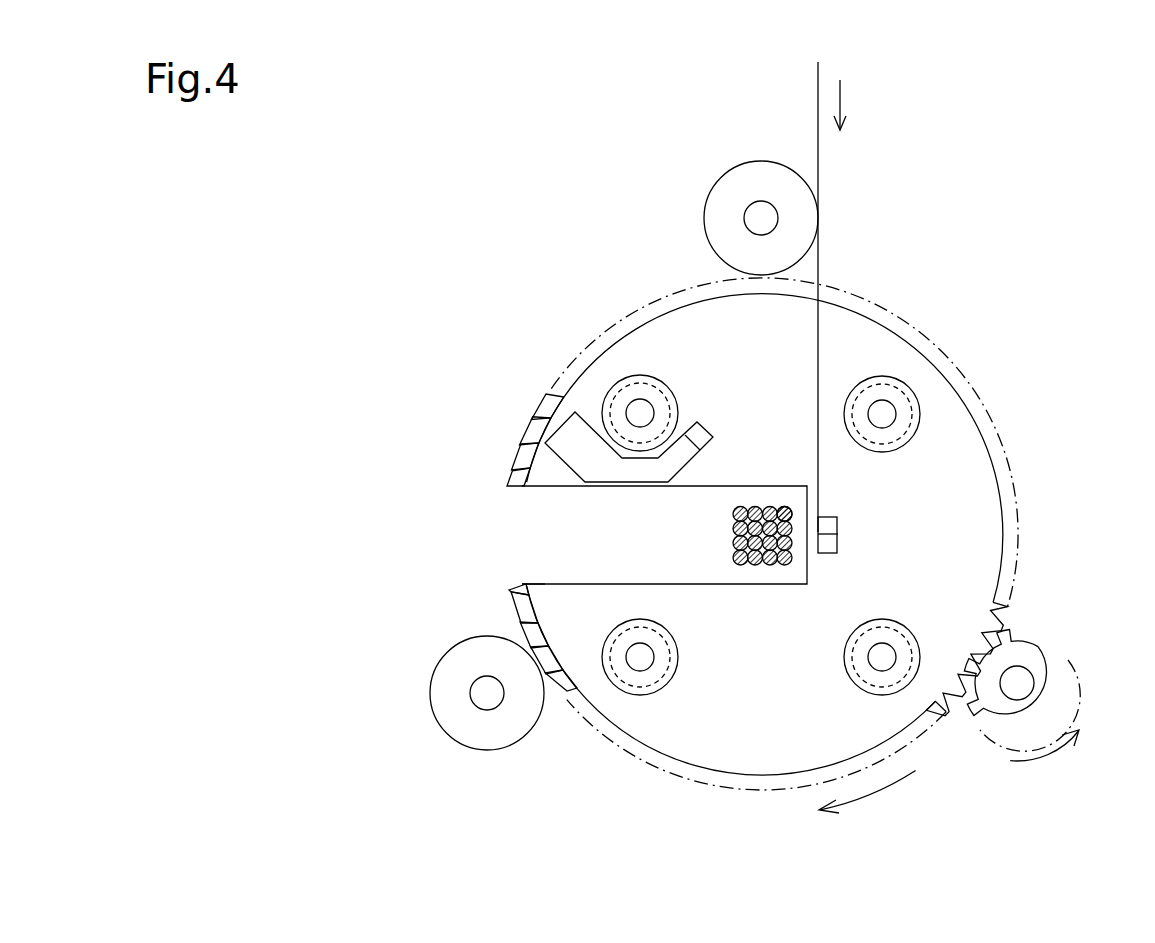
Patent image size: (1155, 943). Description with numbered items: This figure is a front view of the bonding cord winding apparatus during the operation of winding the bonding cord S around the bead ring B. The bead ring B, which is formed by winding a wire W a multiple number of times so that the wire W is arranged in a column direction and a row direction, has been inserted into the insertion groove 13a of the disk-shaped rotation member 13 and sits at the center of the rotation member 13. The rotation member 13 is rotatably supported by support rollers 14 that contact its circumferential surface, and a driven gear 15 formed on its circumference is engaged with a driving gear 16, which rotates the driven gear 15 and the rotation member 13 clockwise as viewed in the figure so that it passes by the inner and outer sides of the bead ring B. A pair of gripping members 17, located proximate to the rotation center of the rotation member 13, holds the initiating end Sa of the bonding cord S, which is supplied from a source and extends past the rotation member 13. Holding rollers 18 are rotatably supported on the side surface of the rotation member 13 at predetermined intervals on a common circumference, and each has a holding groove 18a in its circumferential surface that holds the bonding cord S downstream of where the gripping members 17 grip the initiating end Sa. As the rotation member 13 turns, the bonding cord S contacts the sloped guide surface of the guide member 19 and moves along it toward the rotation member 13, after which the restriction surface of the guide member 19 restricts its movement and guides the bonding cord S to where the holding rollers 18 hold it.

The rotation member 13 is at (864, 332).
The insertion groove 13a is at (545, 584).
The support rollers 14 is at (708, 222).
The driven gear 15 is at (1012, 595).
The driving gear 16 is at (1052, 676).
The gripping members 17 is at (838, 527).
The holding rollers 18 is at (651, 376).
The holding groove 18a is at (853, 410).
The guide member 19 is at (578, 465).
The bonding cord S is at (822, 163).
The initiating end Sa is at (838, 534).
The bead ring B is at (734, 506).
The wire W is at (778, 508).